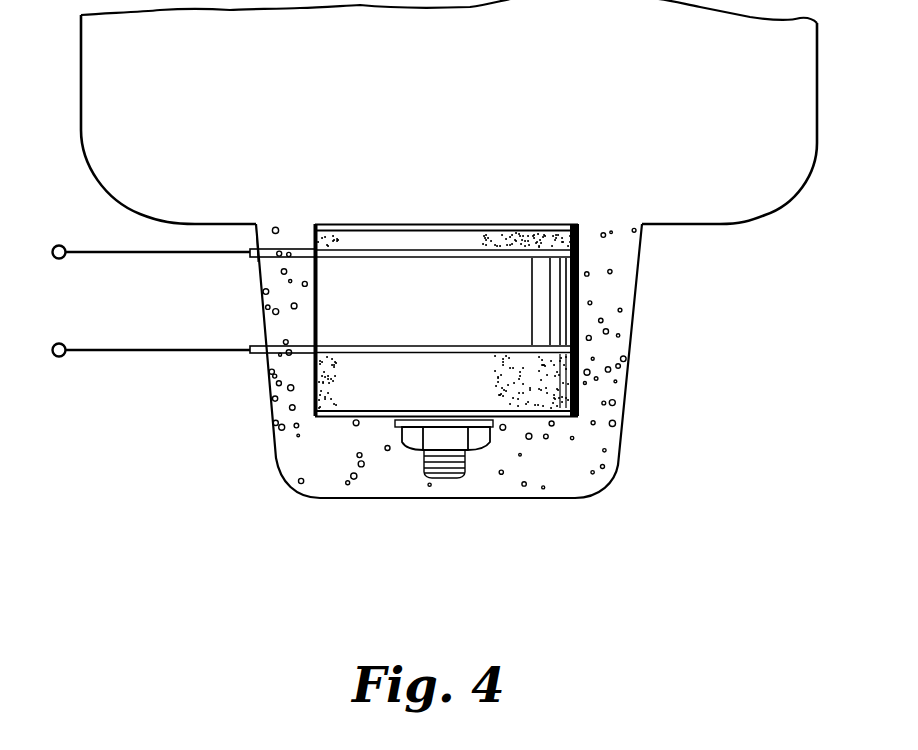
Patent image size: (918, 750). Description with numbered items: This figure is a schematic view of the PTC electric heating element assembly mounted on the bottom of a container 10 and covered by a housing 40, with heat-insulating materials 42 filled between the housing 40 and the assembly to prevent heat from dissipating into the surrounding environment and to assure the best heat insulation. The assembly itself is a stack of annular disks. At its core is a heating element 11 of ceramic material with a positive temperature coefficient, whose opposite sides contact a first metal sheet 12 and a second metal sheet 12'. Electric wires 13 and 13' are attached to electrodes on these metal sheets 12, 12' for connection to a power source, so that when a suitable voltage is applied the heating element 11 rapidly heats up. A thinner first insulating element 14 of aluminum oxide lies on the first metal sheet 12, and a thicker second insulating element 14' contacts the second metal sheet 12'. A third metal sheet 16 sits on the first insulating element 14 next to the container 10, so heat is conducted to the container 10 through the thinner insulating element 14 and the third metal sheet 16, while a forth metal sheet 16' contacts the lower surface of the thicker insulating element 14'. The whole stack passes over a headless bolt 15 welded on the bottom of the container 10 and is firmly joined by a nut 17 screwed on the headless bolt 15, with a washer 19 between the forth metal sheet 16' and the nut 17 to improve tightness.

The container 10 is at (719, 207).
The heating element 11 is at (578, 352).
The first metal sheet 12 is at (619, 301).
The second metal sheet 12' is at (636, 381).
The electric wire 13 is at (306, 221).
The electric wire 13' is at (313, 379).
The first insulating element 14 is at (633, 297).
The second insulating element 14' is at (638, 394).
The headless bolt 15 is at (450, 478).
The third metal sheet 16 is at (511, 248).
The forth metal sheet 16' is at (508, 415).
The nut 17 is at (435, 437).
The washer 19 is at (395, 422).
The housing 40 is at (278, 443).
The heat-insulating materials 42 is at (277, 387).